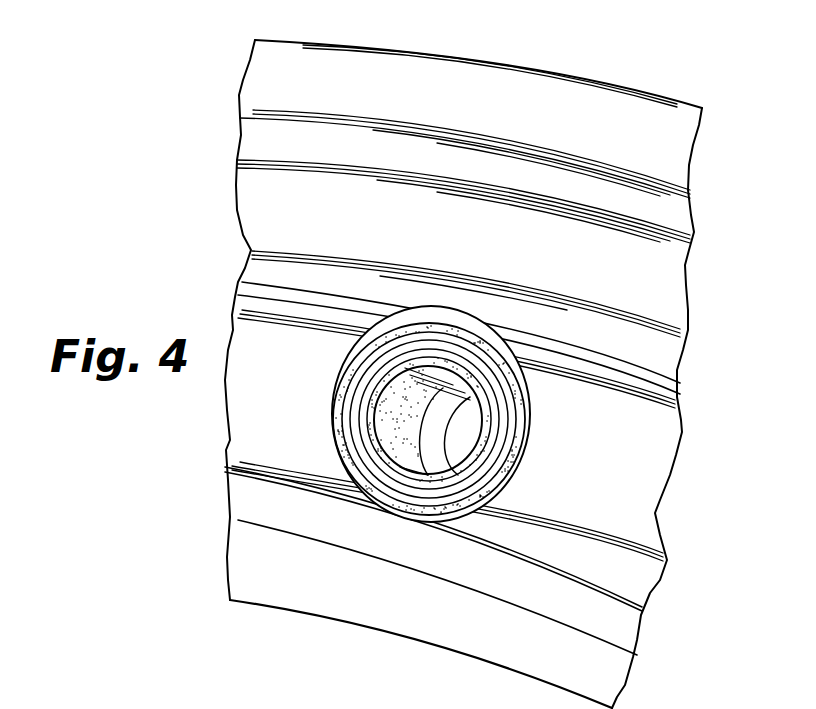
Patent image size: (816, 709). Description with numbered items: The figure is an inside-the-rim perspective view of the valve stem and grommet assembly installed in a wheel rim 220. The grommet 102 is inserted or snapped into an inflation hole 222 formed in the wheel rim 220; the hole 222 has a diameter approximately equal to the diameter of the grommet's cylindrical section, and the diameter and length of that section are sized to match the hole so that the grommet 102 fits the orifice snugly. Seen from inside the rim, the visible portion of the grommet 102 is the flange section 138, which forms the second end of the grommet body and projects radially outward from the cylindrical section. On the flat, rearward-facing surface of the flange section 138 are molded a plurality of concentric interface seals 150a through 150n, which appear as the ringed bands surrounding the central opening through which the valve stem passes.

The wheel rim 220 is at (507, 62).
The inflation hole 222 is at (413, 308).
The grommet 102 is at (446, 334).
The flange section 138 is at (463, 500).
The interface seal 150a is at (367, 441).
The interface seal 150n is at (465, 359).